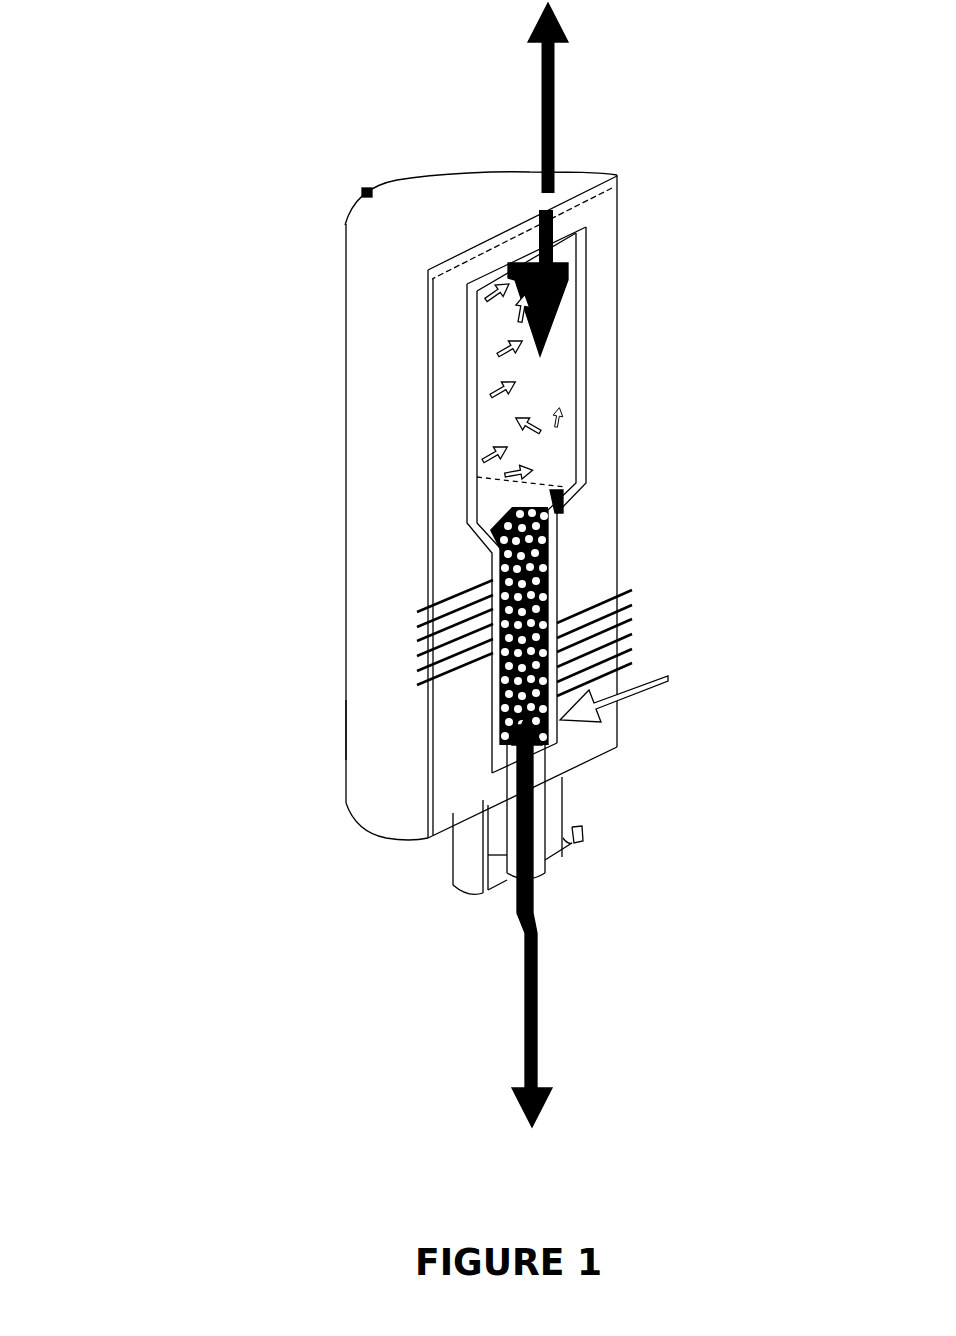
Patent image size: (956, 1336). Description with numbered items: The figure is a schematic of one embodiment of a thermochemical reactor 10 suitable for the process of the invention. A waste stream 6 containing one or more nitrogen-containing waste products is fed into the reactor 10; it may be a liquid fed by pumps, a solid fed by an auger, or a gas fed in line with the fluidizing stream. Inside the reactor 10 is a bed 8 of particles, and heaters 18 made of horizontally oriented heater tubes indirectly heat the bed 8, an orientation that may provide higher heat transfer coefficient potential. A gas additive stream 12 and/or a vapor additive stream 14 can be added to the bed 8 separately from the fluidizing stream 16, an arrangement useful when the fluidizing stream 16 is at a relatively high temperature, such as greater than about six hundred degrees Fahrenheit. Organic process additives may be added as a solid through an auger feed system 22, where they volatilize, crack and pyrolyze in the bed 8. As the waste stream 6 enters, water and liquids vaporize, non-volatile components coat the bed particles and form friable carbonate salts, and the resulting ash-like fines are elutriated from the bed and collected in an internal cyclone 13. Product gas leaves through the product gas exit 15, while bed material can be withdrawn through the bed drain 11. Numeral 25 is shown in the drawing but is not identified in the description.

The waste stream 6 is at (318, 694).
The bed 8 is at (592, 460).
The thermochemical reactor 10 is at (668, 486).
The bed drain 11 is at (502, 920).
The gas additive stream 12 is at (633, 691).
The internal cyclone 13 is at (600, 282).
The vapor additive stream 14 is at (455, 749).
The product gas exit 15 is at (546, 242).
The fluidizing stream 16 is at (622, 803).
The heaters 18 is at (548, 638).
The auger feed system 22 is at (318, 611).
The shell exterior 25 is at (236, 701).